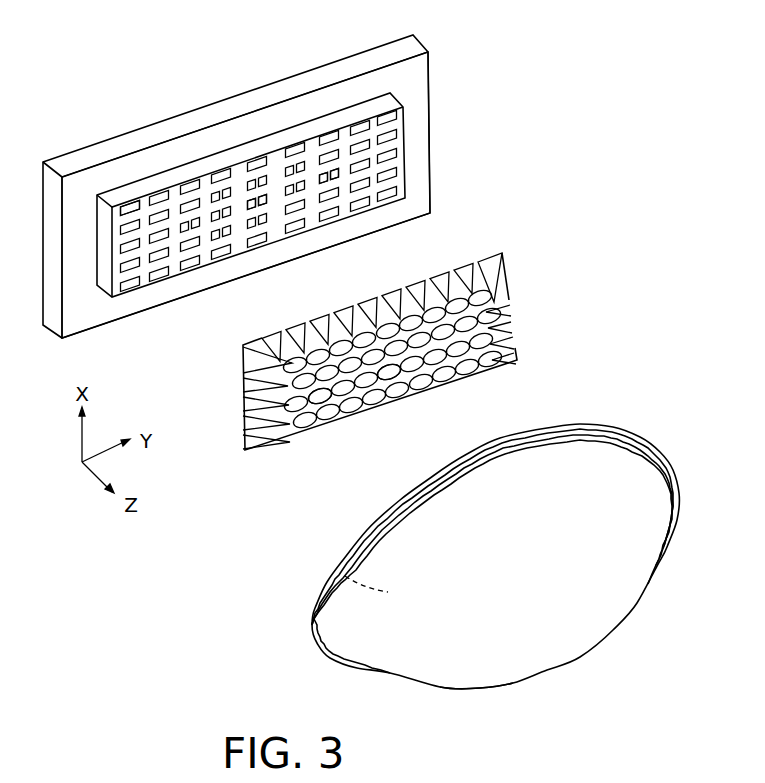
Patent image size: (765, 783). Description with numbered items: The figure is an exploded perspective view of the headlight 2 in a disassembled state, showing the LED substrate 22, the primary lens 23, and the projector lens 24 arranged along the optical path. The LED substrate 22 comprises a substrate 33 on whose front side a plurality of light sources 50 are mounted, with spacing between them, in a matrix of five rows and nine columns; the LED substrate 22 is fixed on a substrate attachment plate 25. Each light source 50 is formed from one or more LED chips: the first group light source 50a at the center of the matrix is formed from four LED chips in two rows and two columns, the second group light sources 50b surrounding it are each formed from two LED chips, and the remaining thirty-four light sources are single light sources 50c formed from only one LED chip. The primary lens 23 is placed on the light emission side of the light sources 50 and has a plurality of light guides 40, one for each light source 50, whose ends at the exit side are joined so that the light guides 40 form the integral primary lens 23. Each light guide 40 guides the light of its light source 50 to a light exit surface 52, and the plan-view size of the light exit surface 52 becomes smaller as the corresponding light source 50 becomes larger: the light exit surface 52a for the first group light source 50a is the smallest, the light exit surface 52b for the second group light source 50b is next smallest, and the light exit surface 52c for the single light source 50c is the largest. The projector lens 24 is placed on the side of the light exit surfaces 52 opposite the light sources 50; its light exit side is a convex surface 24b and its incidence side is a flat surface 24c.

The LED substrate 22 is at (412, 151).
The substrate attachment plate 25 is at (355, 95).
The substrate 33 is at (285, 137).
The light sources 50 is at (190, 182).
The first group light source 50a is at (247, 209).
The second group light source 50b is at (311, 187).
The single light source 50c is at (130, 201).
The primary lens 23 is at (515, 319).
The light exit surface 52 is at (460, 368).
The light exit surface 52a is at (392, 372).
The light exit surface 52b is at (414, 338).
The light exit surface 52c is at (278, 377).
The light guide 40 is at (326, 398).
The projector lens 24 is at (617, 411).
The convex surface 24b is at (562, 640).
The flat surface 24c is at (340, 573).
The headlight 2 is at (490, 772).